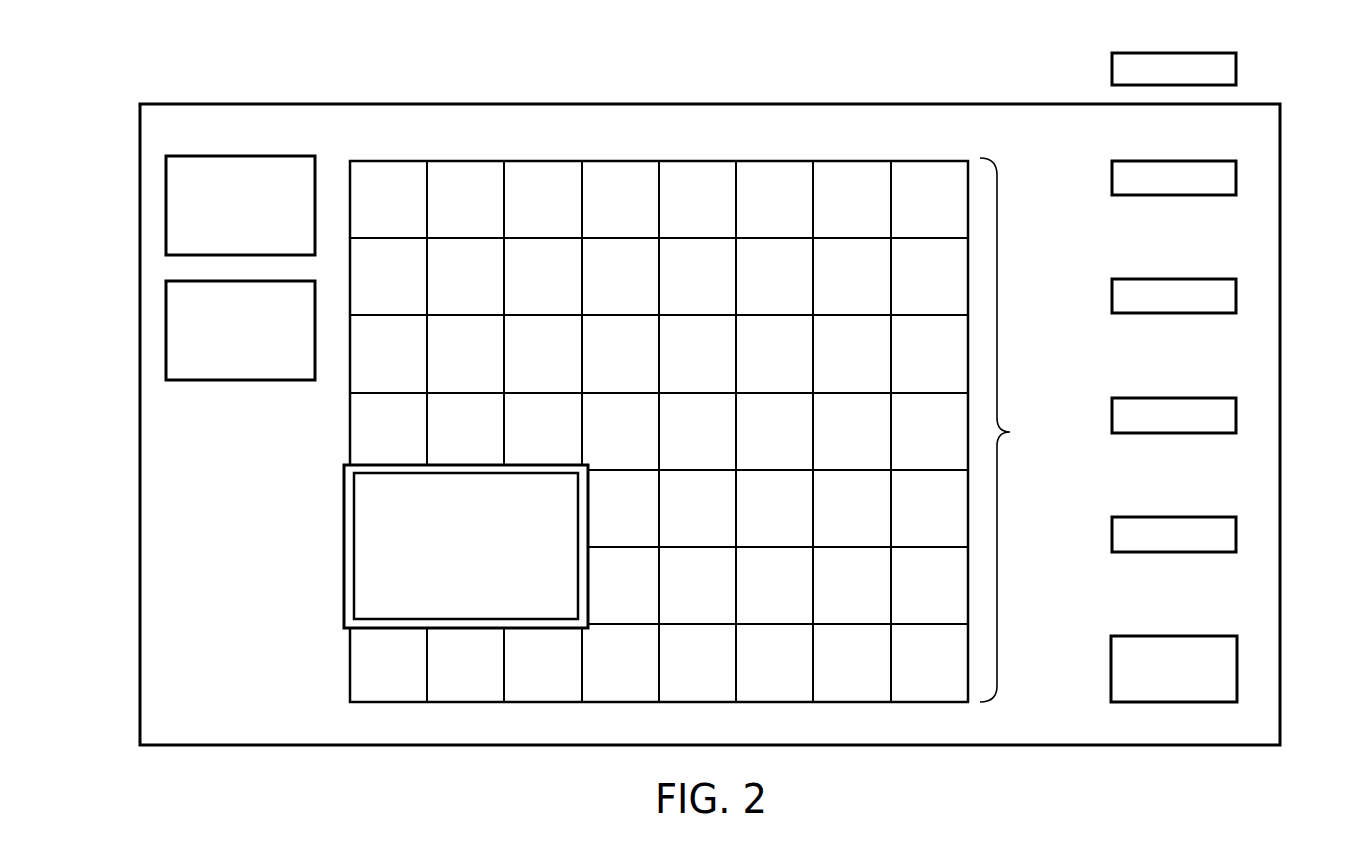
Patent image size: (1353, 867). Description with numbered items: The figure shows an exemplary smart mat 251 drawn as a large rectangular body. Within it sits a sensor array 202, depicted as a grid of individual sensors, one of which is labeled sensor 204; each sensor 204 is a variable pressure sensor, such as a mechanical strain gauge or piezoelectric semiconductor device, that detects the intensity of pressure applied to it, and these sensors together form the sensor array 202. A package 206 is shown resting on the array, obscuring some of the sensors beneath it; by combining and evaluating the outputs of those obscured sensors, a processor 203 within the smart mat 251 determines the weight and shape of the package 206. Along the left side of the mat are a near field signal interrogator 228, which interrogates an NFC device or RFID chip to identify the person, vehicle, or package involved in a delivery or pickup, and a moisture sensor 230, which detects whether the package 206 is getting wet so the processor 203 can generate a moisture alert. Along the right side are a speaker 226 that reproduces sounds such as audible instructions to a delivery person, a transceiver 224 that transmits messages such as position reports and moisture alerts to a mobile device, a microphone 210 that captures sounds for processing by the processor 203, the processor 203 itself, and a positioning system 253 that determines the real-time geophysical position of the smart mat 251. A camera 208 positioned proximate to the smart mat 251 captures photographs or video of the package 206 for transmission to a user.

The smart mat 251 is at (517, 104).
The sensor array 202 is at (997, 378).
The sensor 204 is at (593, 386).
The package 206 is at (344, 553).
The near field signal interrogator 228 is at (166, 205).
The moisture sensor 230 is at (166, 332).
The camera 208 is at (1236, 70).
The speaker 226 is at (1236, 178).
The transceiver 224 is at (1236, 296).
The microphone 210 is at (1236, 415).
The processor 203 is at (1236, 534).
The positioning system 253 is at (1237, 668).